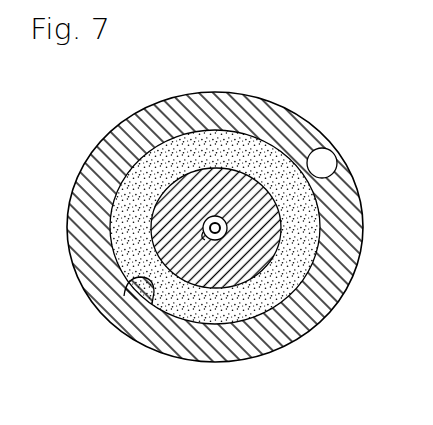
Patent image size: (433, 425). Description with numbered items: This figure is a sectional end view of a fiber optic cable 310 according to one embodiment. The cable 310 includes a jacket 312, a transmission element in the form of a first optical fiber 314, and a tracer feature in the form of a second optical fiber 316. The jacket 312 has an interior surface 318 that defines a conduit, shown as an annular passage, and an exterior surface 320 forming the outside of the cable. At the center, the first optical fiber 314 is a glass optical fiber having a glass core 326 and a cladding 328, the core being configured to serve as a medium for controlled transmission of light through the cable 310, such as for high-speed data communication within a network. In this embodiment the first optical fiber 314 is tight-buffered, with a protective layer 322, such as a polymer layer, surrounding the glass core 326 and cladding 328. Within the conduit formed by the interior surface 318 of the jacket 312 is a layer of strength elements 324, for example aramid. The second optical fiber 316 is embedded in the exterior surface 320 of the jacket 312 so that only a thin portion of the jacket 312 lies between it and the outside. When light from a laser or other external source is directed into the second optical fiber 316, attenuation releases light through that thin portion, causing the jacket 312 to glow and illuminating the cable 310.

The fiber optic cable 310 is at (219, 226).
The jacket 312 is at (364, 210).
The first optical fiber 314 is at (213, 216).
The second optical fiber 316 is at (320, 166).
The interior surface 318 is at (124, 287).
The exterior surface 320 is at (146, 347).
The protective layer 322 is at (195, 181).
The layer of strength elements 324 is at (212, 310).
The glass core 326 is at (197, 235).
The cladding 328 is at (204, 228).